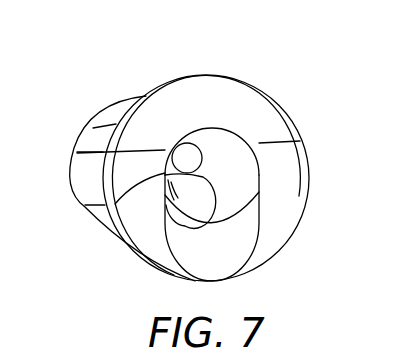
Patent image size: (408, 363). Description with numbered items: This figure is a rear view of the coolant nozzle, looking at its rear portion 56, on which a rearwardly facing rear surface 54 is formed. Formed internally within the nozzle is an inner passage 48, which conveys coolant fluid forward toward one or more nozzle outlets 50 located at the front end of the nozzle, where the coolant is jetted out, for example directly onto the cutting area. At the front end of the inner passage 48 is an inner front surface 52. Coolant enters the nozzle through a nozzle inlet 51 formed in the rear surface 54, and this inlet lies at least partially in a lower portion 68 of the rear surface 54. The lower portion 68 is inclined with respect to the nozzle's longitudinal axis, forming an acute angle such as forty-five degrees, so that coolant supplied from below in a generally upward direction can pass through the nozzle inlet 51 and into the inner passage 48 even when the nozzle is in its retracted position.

The inner passage 48 is at (226, 146).
The nozzle outlet 50 is at (190, 158).
The nozzle inlet 51 is at (280, 183).
The inner front surface 52 is at (118, 222).
The rear surface 54 is at (280, 160).
The rear portion 56 is at (115, 109).
The lower portion 68 is at (283, 209).